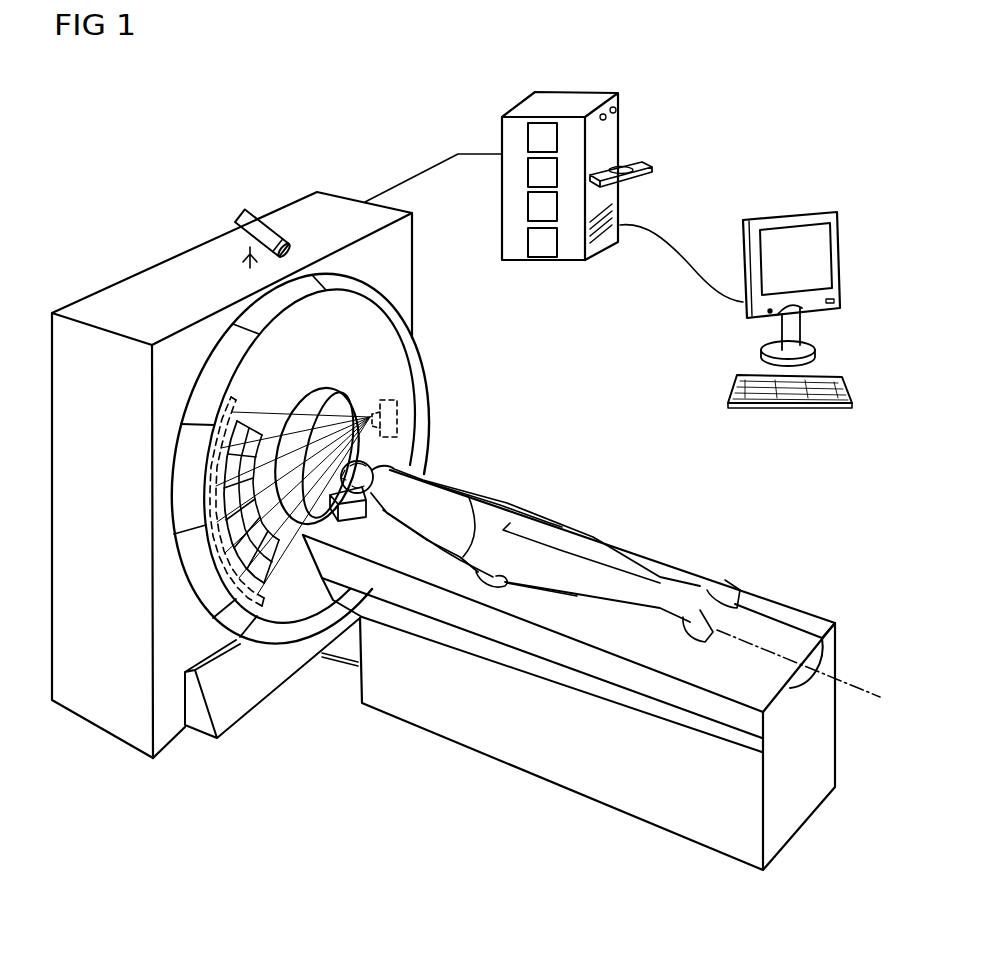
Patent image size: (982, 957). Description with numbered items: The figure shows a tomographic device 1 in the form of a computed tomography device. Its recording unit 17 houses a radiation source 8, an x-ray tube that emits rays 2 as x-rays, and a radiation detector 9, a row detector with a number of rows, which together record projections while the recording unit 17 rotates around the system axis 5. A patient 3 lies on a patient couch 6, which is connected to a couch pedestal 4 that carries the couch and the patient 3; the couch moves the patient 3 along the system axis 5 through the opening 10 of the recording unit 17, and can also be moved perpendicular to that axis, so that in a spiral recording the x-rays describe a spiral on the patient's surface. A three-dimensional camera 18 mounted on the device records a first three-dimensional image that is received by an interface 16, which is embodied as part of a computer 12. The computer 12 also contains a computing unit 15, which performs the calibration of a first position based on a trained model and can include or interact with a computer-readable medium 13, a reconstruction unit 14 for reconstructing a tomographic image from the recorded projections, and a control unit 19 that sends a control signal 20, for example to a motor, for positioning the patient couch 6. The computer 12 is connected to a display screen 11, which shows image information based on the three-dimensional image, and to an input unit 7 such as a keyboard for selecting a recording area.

The computed tomography system 1 is at (136, 244).
The rays 2 is at (333, 410).
The patient 3 is at (473, 508).
The couch pedestal 4 is at (532, 747).
The system axis 5 is at (870, 690).
The patient couch 6 is at (785, 614).
The input unit 7 is at (737, 396).
The radiation source 8 is at (399, 409).
The radiation detector 9 is at (245, 584).
The opening 10 is at (300, 410).
The display screen 11 is at (787, 214).
The computer 12 is at (558, 100).
The computer-readable medium 13 is at (625, 164).
The reconstruction unit 14 is at (528, 137).
The computing unit 15 is at (528, 172).
The interface 16 is at (528, 242).
The recording unit 17 is at (426, 350).
The 3D camera 18 is at (247, 214).
The control unit 19 is at (528, 207).
The control signal 20 is at (400, 182).